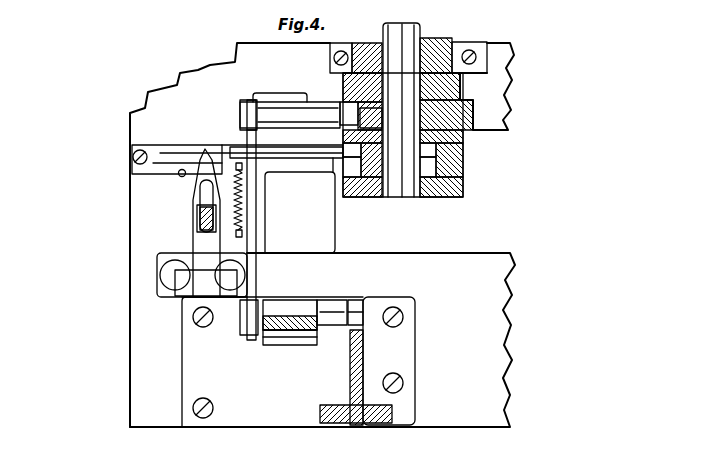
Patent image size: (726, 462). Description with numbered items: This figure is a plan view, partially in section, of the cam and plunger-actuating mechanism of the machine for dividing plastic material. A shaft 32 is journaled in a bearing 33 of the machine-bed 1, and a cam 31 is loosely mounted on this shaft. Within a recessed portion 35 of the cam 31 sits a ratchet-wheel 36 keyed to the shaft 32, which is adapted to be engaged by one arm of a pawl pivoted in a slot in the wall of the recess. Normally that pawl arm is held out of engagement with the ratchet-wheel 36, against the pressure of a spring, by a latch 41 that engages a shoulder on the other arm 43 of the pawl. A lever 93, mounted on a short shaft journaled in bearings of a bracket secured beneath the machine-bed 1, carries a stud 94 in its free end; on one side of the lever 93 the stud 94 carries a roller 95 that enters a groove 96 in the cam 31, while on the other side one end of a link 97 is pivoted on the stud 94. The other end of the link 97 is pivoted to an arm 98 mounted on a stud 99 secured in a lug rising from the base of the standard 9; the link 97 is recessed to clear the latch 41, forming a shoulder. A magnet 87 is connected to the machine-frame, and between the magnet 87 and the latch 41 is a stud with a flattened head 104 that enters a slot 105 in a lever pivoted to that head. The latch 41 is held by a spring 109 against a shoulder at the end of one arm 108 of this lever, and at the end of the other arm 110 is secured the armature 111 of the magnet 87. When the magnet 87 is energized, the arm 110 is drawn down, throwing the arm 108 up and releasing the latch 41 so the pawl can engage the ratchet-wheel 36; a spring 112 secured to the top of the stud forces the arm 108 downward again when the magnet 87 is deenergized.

The machine-bed 1 is at (497, 108).
The standard 9 is at (363, 357).
The cam 31 is at (463, 142).
The shaft 32 is at (397, 42).
The bearing 33 is at (463, 97).
The recessed portion 35 is at (463, 168).
The ratchet-wheel 36 is at (463, 152).
The latch 41 is at (297, 158).
The arm of pawl 43 is at (357, 198).
The magnet 87 is at (213, 290).
The lever 93 is at (292, 113).
The stud 94 is at (240, 112).
The roller 95 is at (370, 110).
The groove 96 is at (250, 133).
The link 97 is at (257, 239).
The arm 98 is at (305, 342).
The stud 99 is at (365, 305).
The flattened head 104 is at (200, 220).
The slot 105 is at (200, 232).
The arm of lever 108 is at (205, 153).
The spring 109 is at (242, 205).
The arm of lever 110 is at (212, 262).
The armature 111 is at (177, 273).
The spring 112 is at (200, 190).